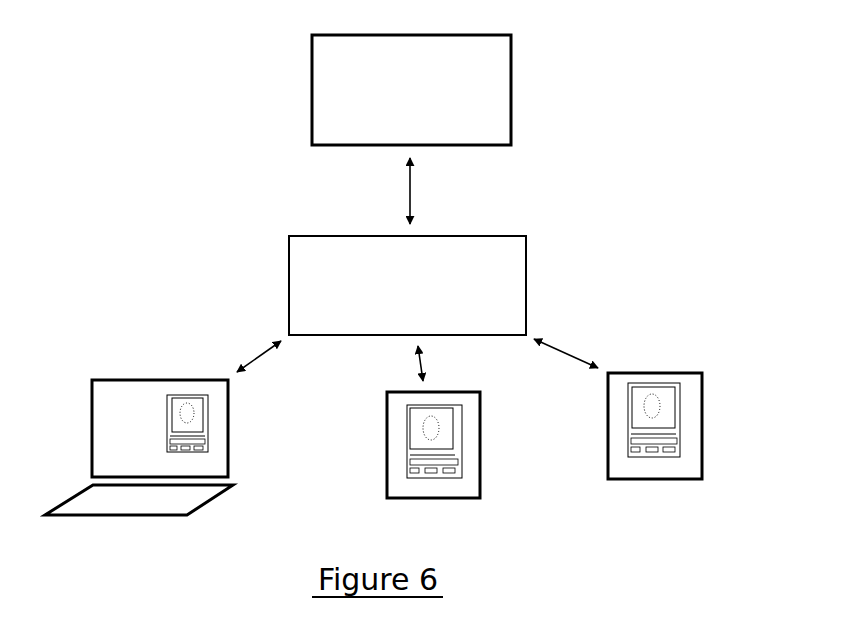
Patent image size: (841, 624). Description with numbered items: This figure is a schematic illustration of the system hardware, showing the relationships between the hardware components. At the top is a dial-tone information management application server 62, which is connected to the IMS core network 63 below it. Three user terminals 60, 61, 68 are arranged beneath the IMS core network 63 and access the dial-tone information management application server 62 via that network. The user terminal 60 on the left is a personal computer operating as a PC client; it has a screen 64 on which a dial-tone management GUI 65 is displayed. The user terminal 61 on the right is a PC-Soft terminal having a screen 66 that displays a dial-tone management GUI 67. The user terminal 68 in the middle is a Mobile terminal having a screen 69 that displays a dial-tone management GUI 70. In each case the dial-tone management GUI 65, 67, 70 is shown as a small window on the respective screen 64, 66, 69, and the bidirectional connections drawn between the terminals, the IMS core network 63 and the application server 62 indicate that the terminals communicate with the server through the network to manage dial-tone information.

The user terminal 60 is at (146, 433).
The user terminal 61 is at (695, 413).
The dial-tone information management application server 62 is at (411, 90).
The IMS core network 63 is at (407, 285).
The screen 64 is at (118, 422).
The dial-tone management GUI 65 is at (202, 433).
The screen 66 is at (692, 388).
The dial-tone management GUI 67 is at (678, 425).
The user terminal 68 is at (426, 436).
The screen 69 is at (392, 403).
The dial-tone management GUI 70 is at (453, 452).